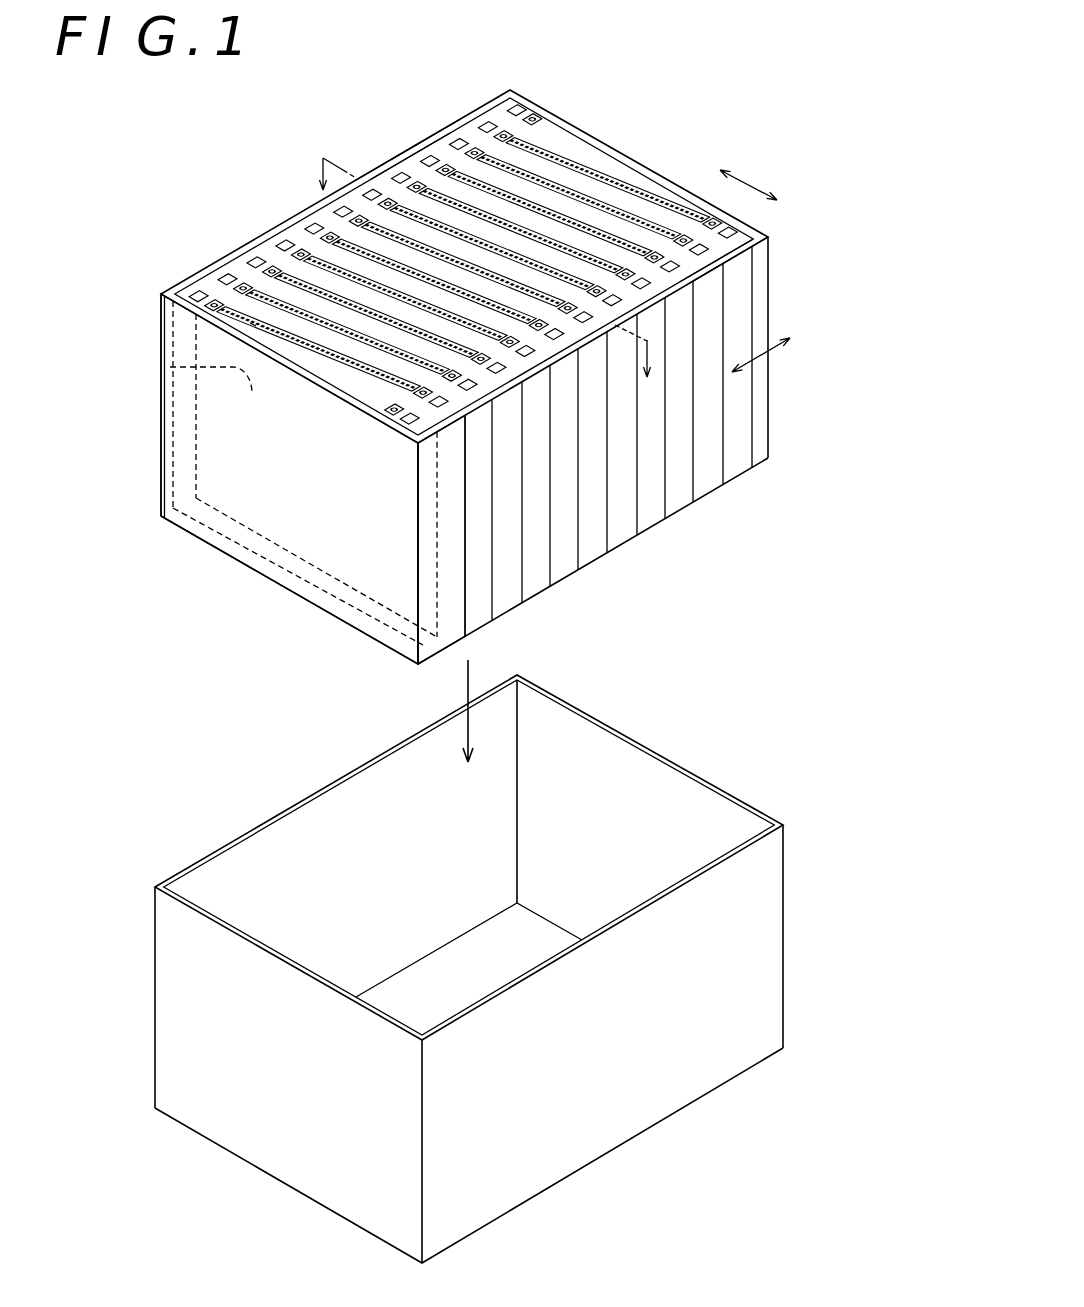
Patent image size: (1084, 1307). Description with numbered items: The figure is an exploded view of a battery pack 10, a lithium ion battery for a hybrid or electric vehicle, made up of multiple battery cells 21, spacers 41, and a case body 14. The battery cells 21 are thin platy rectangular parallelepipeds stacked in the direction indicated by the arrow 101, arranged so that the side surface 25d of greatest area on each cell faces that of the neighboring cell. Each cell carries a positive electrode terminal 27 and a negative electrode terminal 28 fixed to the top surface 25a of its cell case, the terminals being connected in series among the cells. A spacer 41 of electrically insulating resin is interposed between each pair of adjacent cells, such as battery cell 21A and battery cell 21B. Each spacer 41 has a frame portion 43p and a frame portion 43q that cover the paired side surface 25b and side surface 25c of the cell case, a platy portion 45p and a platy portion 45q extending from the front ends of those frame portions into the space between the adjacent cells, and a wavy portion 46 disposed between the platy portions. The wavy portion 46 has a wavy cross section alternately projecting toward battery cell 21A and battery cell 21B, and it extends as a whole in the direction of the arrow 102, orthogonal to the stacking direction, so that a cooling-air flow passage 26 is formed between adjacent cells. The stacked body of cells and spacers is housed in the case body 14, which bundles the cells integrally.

The battery pack 10 is at (178, 121).
The case body 14 is at (180, 977).
The battery cell 21 is at (654, 180).
The battery cell 21A is at (391, 159).
The battery cell 21B is at (355, 181).
The top surface 25a is at (553, 130).
The side surface 25b is at (187, 397).
The side surface 25c is at (427, 598).
The side surface 25d is at (170, 367).
The cooling-air flow passage 26 is at (498, 150).
The positive electrode terminal 27 is at (193, 310).
The negative electrode terminal 28 is at (399, 405).
The spacer 41 is at (362, 159).
The frame portion 43p is at (392, 163).
The frame portion 43q is at (700, 302).
The platy portion 45p is at (418, 156).
The platy portion 45q is at (720, 263).
The wavy portion 46 is at (470, 200).
The arrow 101 is at (758, 357).
The arrow 102 is at (752, 180).